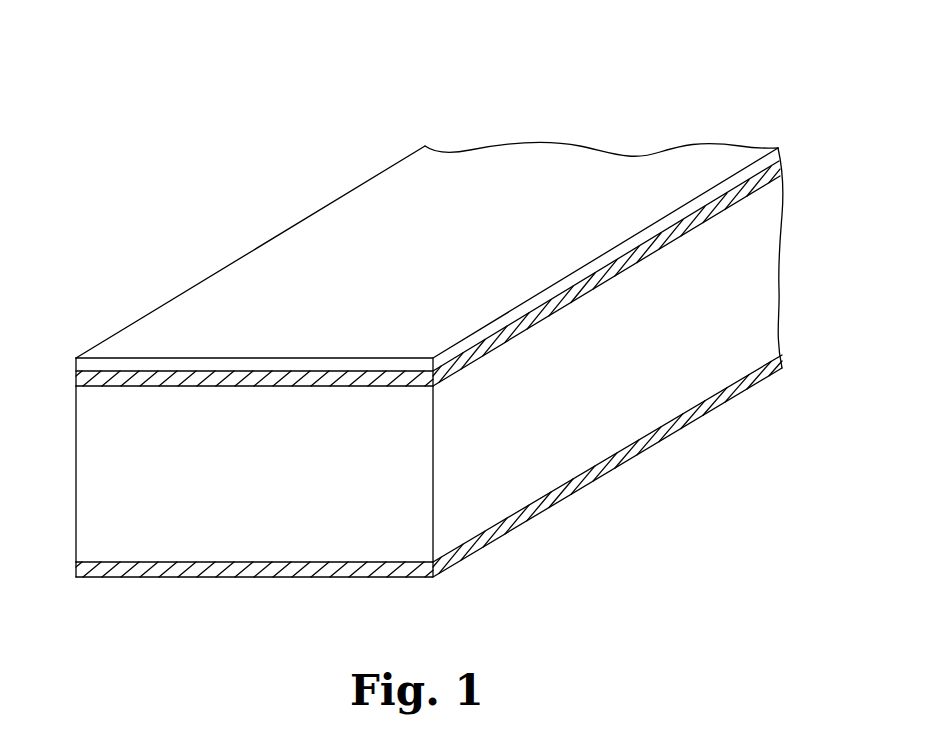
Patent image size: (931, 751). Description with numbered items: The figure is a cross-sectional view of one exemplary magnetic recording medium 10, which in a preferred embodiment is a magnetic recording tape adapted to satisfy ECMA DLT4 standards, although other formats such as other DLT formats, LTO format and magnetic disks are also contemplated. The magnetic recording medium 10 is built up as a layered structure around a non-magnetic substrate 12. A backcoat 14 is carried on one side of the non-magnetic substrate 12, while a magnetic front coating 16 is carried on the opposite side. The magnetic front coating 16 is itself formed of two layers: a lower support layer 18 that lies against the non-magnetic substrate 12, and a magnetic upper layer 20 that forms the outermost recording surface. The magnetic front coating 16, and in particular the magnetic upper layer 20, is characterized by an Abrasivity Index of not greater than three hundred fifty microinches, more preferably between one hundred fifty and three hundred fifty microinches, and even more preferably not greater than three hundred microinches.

The magnetic recording medium 10 is at (556, 88).
The non-magnetic substrate 12 is at (530, 478).
The backcoat 14 is at (305, 588).
The magnetic front coating 16 is at (750, 213).
The lower support layer 18 is at (158, 300).
The magnetic upper layer 20 is at (70, 358).